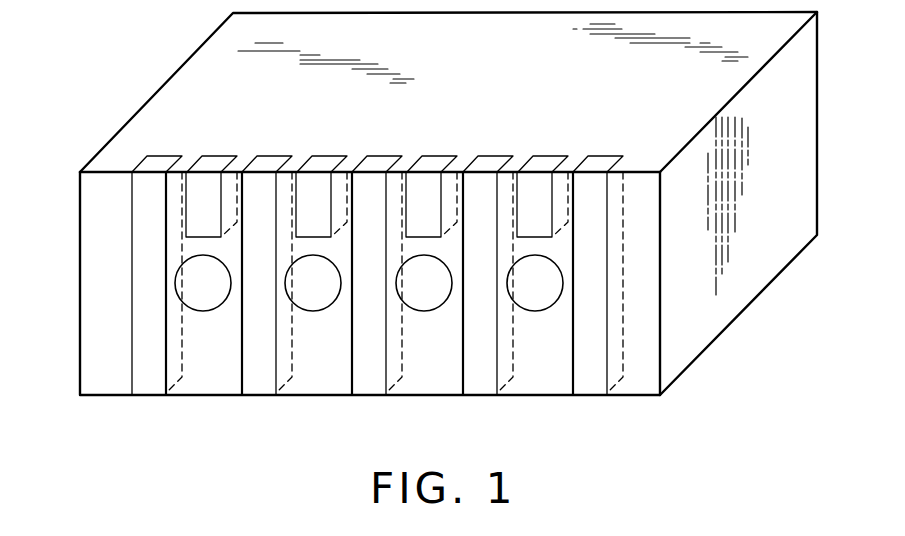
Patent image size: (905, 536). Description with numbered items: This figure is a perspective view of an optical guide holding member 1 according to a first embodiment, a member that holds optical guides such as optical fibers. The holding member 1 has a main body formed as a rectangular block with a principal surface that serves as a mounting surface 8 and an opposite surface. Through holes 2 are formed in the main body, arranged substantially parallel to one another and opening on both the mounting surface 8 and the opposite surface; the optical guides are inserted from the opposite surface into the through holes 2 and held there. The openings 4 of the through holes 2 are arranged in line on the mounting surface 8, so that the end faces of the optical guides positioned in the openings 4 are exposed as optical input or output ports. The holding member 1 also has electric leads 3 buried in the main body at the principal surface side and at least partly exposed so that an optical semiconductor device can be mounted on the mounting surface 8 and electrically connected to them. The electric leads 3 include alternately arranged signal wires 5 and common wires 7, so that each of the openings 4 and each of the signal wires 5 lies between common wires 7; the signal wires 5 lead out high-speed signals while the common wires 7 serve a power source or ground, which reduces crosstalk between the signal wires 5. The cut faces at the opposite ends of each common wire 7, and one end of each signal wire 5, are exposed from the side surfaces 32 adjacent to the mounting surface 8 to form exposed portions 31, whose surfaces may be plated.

The holding member 1 is at (738, 297).
The through holes 2 is at (537, 295).
The electric leads 3 is at (148, 360).
The openings 4 is at (202, 295).
The signal wires 5 is at (203, 185).
The common wires 7 is at (153, 187).
The mounting surface 8 is at (92, 225).
The exposed portions 31 is at (147, 160).
The side surfaces 32 is at (212, 65).